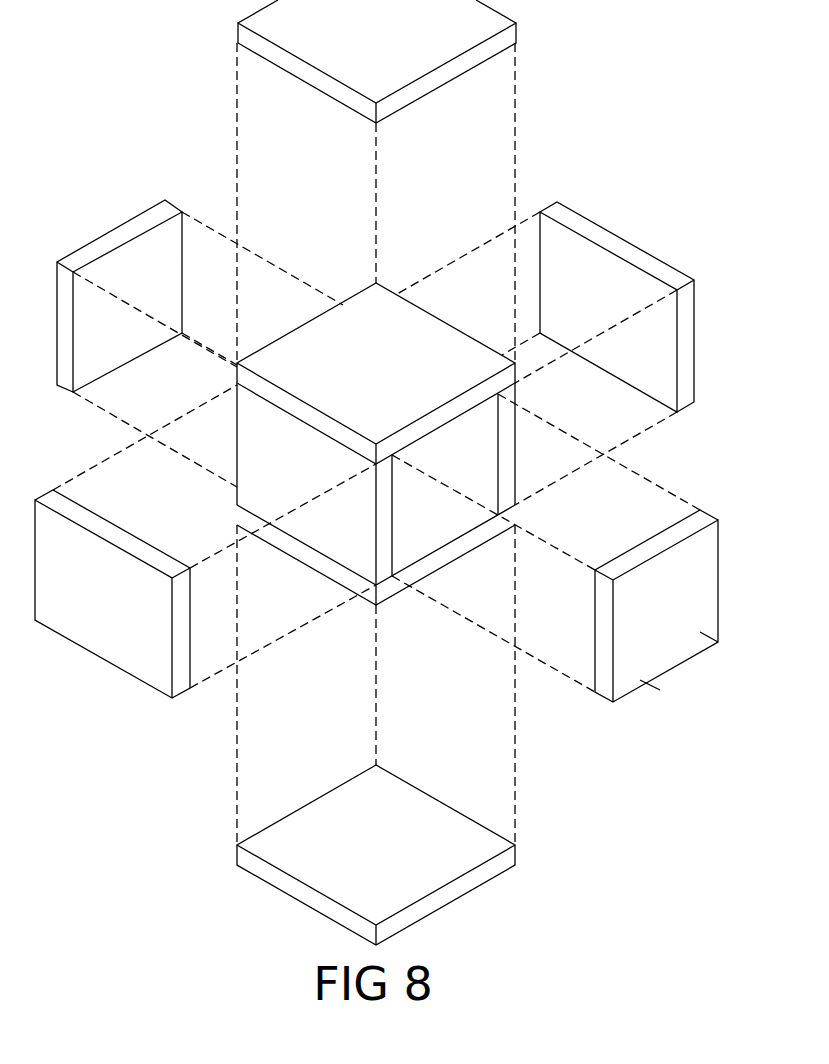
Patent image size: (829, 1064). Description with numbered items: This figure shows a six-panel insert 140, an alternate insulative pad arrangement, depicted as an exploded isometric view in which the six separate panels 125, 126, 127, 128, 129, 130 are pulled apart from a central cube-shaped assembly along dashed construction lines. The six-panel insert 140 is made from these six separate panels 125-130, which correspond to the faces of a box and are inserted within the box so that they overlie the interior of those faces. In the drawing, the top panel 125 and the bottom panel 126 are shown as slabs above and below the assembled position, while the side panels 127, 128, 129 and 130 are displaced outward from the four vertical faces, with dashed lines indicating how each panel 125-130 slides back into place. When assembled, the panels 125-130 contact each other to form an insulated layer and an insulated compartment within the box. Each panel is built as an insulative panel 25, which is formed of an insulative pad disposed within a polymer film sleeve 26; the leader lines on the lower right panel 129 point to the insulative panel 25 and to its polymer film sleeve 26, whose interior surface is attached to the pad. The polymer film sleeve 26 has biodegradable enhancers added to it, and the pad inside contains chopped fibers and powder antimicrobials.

The panel 125 is at (358, 35).
The panel 126 is at (295, 858).
The panel 127 is at (81, 613).
The panel 128 is at (569, 300).
The panel 129 is at (644, 624).
The panel 130 is at (90, 343).
The insulative panel 25 is at (682, 648).
The polymer film sleeve 26 is at (645, 668).
The six-panel insert 140 is at (684, 438).